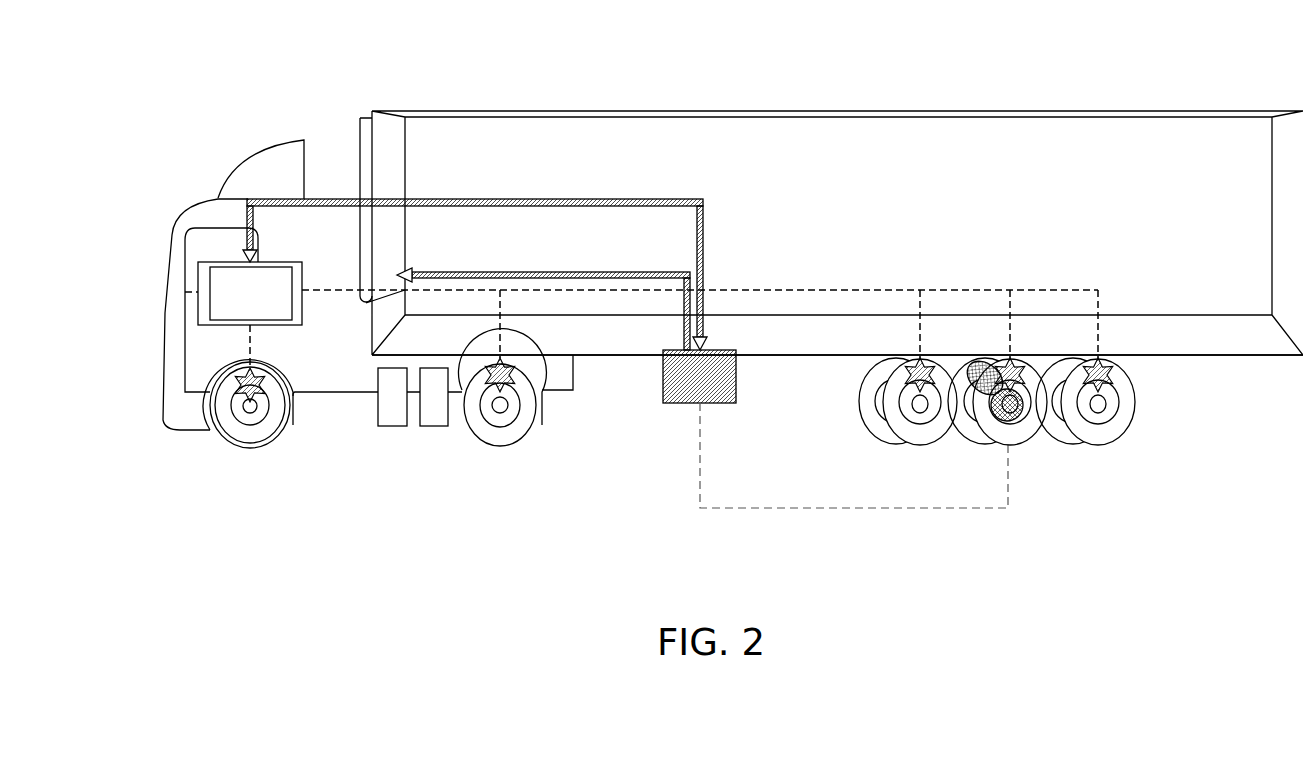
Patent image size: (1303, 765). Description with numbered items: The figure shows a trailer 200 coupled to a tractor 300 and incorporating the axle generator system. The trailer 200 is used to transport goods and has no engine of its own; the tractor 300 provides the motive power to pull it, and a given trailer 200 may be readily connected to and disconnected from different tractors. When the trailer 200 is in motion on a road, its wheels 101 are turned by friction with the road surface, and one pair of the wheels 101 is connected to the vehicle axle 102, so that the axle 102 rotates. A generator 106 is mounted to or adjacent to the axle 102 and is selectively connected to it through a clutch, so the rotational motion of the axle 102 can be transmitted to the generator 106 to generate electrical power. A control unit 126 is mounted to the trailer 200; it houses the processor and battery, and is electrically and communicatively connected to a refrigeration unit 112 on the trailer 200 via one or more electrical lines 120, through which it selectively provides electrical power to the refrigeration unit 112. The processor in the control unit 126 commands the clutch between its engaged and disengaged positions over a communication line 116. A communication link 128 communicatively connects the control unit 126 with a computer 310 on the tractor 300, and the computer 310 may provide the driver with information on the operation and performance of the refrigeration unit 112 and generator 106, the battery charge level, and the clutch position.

The tractor 300 is at (246, 170).
The refrigeration unit 112 is at (388, 130).
The trailer 200 is at (975, 111).
The communication link 128 is at (495, 199).
The electrical lines 120 is at (555, 272).
The computer 310 is at (250, 293).
The control unit 126 is at (685, 405).
The generator 106 is at (958, 395).
The vehicle axle 102 is at (992, 387).
The wheels 101 is at (1030, 418).
The communication line 116 is at (855, 508).